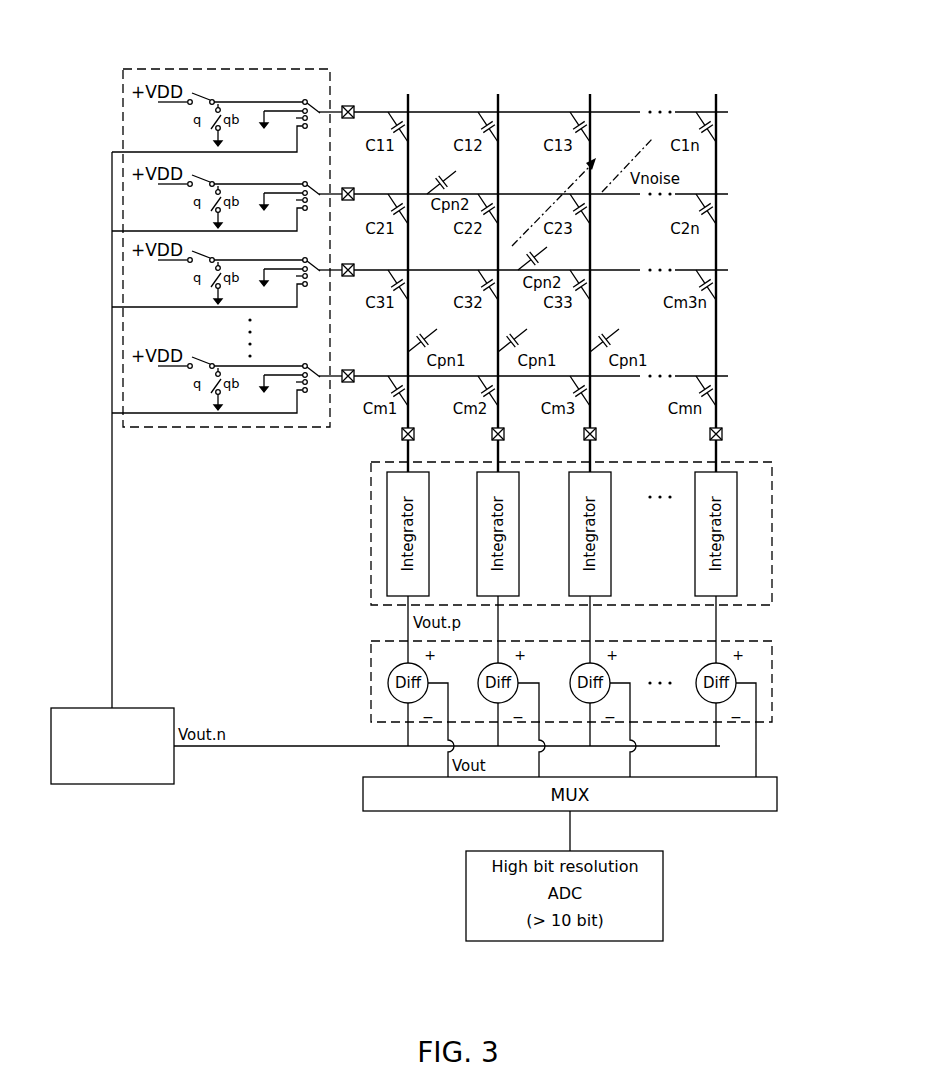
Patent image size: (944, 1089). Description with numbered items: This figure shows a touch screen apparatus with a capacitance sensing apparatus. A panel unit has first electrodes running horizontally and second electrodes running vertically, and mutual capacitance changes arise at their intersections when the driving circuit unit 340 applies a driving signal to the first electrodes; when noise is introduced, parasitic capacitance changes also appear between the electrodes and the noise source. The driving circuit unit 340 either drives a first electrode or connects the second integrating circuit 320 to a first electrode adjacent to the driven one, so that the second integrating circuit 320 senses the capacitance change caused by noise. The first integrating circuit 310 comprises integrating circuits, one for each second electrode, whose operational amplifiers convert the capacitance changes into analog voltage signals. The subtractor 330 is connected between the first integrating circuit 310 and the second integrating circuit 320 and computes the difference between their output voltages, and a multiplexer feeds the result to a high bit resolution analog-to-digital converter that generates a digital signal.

The first integrating circuit 310 is at (772, 486).
The second integrating circuit 320 is at (112, 784).
The subtractor 330 is at (772, 664).
The driving circuit unit 340 is at (222, 68).